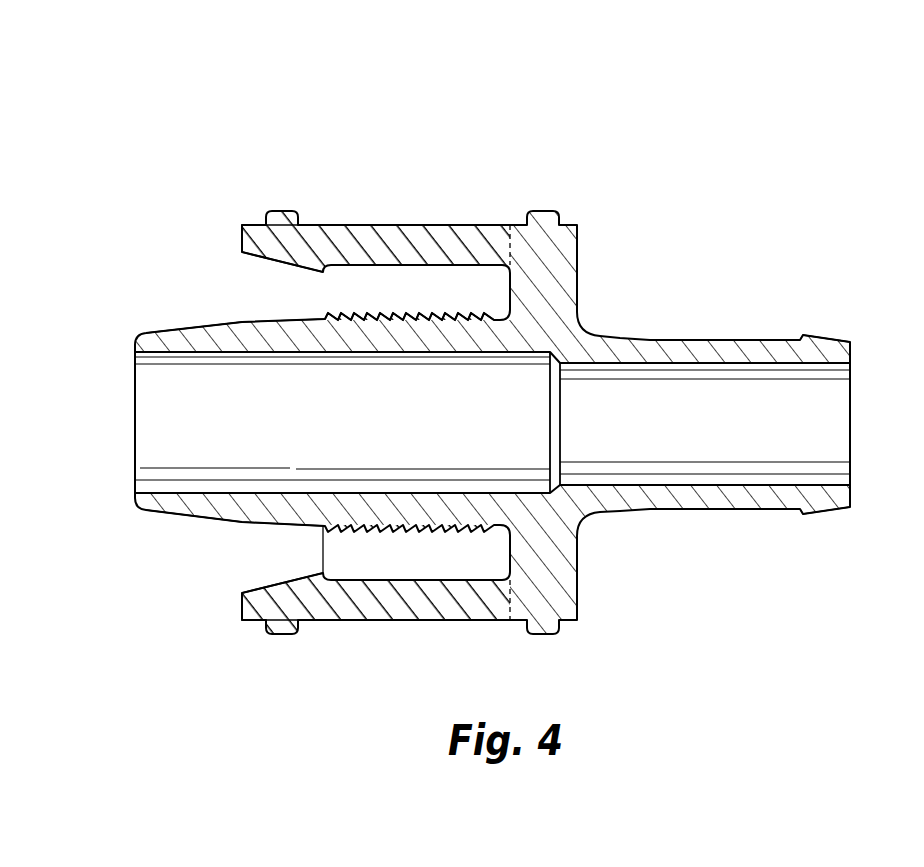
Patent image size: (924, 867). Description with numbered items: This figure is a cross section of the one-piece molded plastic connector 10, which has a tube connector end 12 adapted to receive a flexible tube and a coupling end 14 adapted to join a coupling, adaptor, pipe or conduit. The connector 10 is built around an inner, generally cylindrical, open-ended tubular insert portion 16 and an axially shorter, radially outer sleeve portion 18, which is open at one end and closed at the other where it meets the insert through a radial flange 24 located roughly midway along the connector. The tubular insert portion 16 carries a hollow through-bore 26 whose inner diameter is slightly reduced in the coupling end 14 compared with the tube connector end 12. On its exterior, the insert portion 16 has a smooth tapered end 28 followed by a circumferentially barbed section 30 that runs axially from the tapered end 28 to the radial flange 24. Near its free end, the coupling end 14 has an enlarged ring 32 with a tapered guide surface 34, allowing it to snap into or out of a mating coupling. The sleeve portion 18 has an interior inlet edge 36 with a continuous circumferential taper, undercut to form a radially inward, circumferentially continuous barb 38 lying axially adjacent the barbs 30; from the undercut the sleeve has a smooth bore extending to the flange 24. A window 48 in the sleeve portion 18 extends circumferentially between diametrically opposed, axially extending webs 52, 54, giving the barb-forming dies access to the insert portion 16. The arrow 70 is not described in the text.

The connector 10 is at (527, 132).
The tube connector end 12 is at (111, 543).
The coupling end 14 is at (818, 561).
The tubular insert portion 16 is at (473, 578).
The sleeve portion 18 is at (312, 203).
The radial flange 24 is at (578, 282).
The through-bore 26 is at (172, 407).
The tapered end 28 is at (168, 331).
The barbed section 30 is at (415, 315).
The enlarged ring 32 is at (808, 333).
The tapered guide surface 34 is at (843, 338).
The interior inlet edge 36 is at (242, 266).
The barb 38 is at (330, 557).
The window 48 is at (403, 278).
The web 52 is at (465, 240).
The web 54 is at (405, 605).
The insertion direction arrow 70 is at (186, 285).